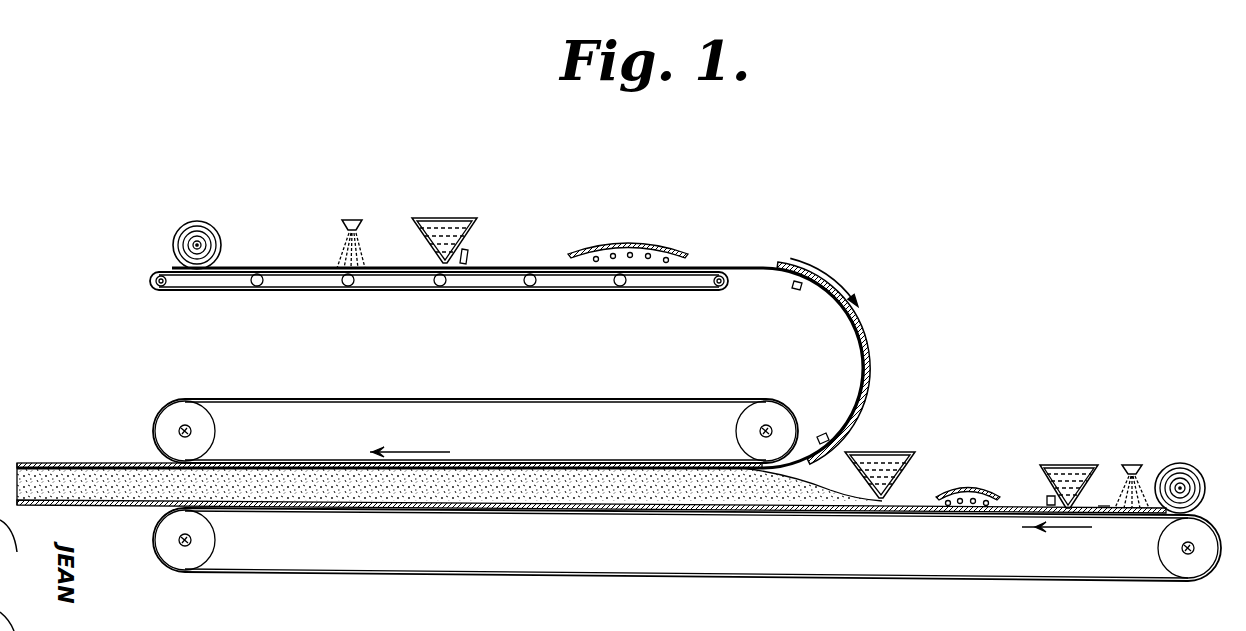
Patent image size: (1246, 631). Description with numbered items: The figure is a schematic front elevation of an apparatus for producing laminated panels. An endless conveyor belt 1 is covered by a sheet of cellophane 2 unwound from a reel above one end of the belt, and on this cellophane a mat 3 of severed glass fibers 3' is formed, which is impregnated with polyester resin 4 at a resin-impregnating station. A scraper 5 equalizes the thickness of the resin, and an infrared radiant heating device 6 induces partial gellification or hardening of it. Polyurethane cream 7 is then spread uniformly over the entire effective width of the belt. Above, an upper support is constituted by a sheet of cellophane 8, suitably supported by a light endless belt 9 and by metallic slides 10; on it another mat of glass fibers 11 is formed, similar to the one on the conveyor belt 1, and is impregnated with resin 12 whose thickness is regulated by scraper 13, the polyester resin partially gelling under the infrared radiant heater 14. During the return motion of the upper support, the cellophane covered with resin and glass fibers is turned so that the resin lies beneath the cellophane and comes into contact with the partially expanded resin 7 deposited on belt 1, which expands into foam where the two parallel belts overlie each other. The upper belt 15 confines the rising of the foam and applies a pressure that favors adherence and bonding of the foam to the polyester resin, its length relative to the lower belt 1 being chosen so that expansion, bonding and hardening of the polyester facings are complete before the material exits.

The endless conveyor belt 1 is at (630, 582).
The sheet of cellophane 2 is at (1188, 465).
The mat of severed glass fibers 3 is at (1100, 471).
The severed glass fibers 3' is at (1134, 464).
The polyester resin 4 is at (1064, 480).
The scraper 5 is at (1046, 497).
The infrared radiant heating device 6 is at (960, 485).
The polyurethane cream 7 is at (876, 470).
The sheet of cellophane 8 is at (222, 257).
The light endless belt 9 is at (222, 292).
The metallic slides 10 is at (847, 338).
The mat of glass fibers 11 is at (345, 240).
The resin 12 is at (441, 240).
The scraper 13 is at (470, 256).
The infrared radiant heater 14 is at (640, 245).
The upper belt 15 is at (634, 462).